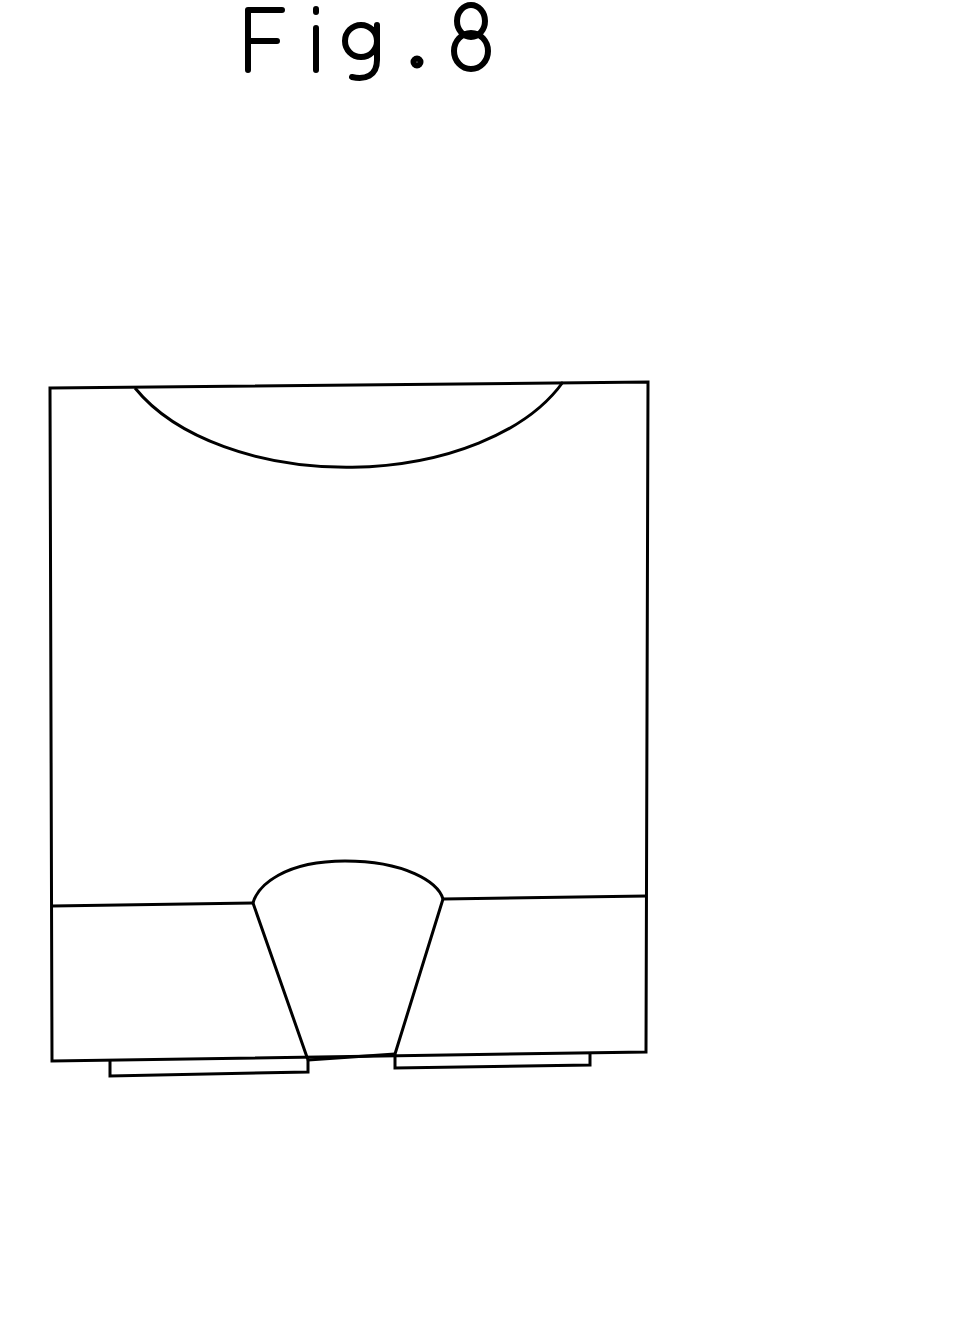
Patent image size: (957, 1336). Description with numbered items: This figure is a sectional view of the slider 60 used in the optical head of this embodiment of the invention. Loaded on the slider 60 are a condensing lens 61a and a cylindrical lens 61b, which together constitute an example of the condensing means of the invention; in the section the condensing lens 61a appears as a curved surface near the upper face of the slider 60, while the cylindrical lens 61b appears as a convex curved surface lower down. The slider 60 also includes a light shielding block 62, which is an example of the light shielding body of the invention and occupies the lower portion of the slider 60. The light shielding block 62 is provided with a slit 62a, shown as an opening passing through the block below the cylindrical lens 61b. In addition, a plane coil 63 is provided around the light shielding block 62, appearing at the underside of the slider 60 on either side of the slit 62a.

The slider 60 is at (650, 327).
The condensing lens 61a is at (480, 418).
The cylindrical lens 61b is at (403, 885).
The light shielding block 62 is at (600, 980).
The slit 62a is at (343, 1073).
The plane coil 63 is at (493, 1067).